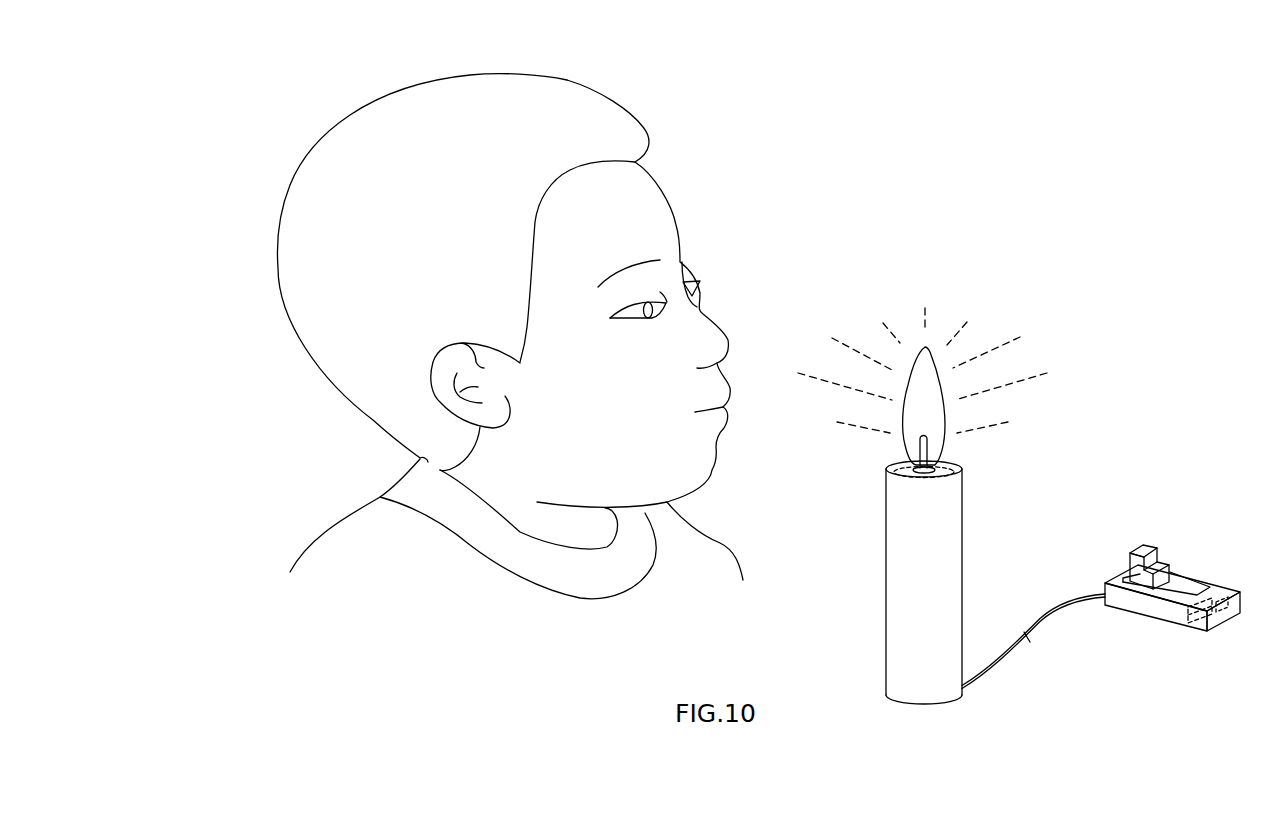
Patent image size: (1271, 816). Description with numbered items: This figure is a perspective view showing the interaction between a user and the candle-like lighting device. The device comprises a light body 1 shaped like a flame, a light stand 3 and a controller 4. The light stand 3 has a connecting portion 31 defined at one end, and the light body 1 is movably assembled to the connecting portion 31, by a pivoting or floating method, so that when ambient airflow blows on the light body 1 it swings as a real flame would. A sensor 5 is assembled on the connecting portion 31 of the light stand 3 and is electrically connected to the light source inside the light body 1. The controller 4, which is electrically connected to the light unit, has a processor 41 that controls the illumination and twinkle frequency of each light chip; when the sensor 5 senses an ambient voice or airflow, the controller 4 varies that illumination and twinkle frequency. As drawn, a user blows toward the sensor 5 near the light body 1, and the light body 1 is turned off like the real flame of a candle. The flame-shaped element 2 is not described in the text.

The light body 1 is at (942, 360).
The flame-shaped lampshade 2 is at (917, 445).
The light stand 3 is at (886, 540).
The connecting portion 31 is at (943, 462).
The sensor 5 is at (965, 473).
The controller 4 is at (1140, 613).
The processor 41 is at (1186, 620).